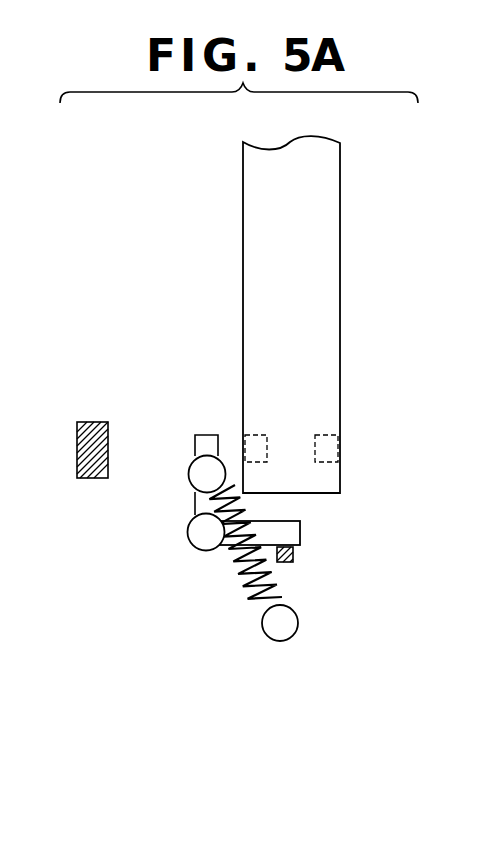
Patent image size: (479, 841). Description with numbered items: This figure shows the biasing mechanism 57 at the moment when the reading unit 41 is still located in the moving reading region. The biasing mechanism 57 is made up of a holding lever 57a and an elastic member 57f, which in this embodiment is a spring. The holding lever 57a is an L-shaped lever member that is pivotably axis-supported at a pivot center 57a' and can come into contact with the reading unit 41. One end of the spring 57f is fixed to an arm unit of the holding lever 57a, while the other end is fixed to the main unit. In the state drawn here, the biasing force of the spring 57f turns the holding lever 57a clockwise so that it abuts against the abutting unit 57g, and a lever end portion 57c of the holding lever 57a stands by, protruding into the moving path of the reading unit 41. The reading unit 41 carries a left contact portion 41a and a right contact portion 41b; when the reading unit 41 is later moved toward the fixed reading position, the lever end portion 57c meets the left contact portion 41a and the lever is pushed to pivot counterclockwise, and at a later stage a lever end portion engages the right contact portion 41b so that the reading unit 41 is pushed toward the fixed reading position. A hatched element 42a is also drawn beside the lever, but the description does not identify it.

The reading unit 41 is at (340, 187).
The left contact portion 41a is at (258, 432).
The right contact portion 41b is at (328, 432).
The stopper 42a is at (93, 420).
The biasing mechanism 57 is at (308, 642).
The holding lever 57a is at (303, 539).
The pivot center 57a' is at (165, 536).
The lever end portion 57c is at (227, 434).
The elastic member 57f is at (238, 578).
The abutting unit 57g is at (293, 557).